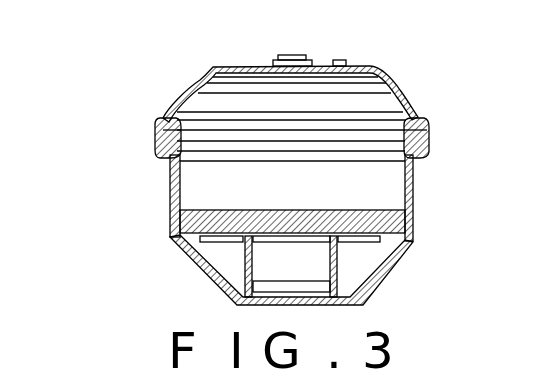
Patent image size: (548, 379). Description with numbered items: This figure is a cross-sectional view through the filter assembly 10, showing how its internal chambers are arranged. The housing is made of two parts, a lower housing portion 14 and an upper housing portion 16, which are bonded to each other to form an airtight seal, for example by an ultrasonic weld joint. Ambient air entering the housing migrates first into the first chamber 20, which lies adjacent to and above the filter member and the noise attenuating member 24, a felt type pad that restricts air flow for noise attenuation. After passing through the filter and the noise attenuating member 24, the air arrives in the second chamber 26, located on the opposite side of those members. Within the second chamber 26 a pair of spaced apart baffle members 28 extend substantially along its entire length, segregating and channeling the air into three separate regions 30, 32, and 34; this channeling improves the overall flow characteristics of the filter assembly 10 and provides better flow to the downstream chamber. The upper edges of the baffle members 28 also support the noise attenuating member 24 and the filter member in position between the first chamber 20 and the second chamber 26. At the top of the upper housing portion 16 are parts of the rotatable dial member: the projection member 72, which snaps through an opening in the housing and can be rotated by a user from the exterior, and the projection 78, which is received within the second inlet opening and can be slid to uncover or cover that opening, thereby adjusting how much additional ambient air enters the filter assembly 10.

The filter assembly 10 is at (118, 141).
The lower housing portion 14 is at (172, 186).
The upper housing portion 16 is at (199, 84).
The first chamber 20 is at (390, 140).
The noise attenuating member 24 is at (406, 212).
The second chamber 26 is at (294, 288).
The baffle members 28 is at (226, 294).
The first region 30 is at (237, 271).
The second region 32 is at (300, 273).
The third region 34 is at (368, 273).
The projection member 72 is at (293, 55).
The projection 78 is at (345, 60).